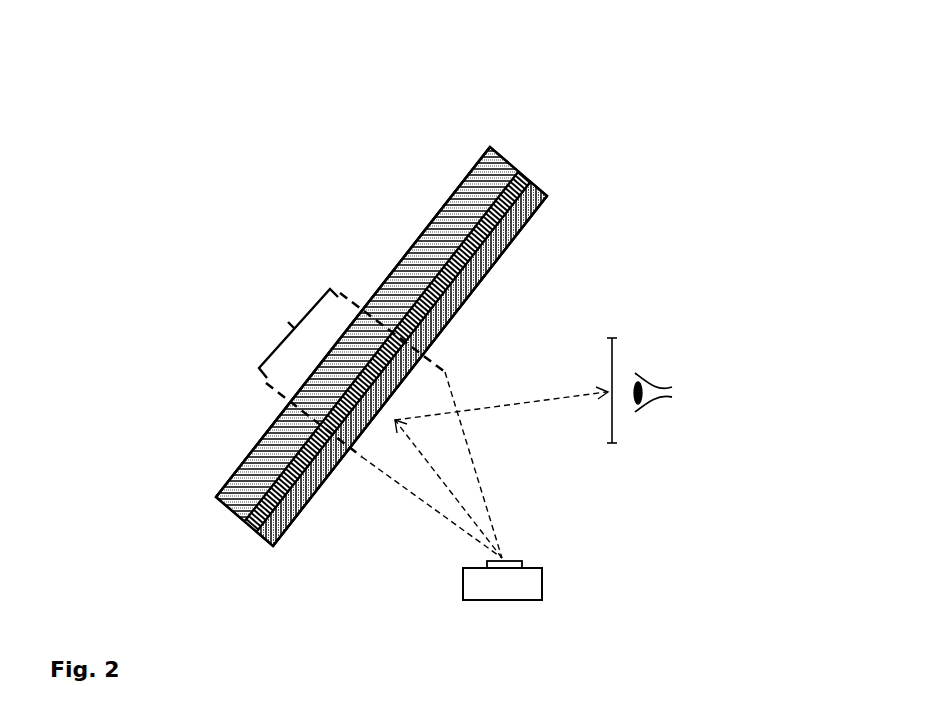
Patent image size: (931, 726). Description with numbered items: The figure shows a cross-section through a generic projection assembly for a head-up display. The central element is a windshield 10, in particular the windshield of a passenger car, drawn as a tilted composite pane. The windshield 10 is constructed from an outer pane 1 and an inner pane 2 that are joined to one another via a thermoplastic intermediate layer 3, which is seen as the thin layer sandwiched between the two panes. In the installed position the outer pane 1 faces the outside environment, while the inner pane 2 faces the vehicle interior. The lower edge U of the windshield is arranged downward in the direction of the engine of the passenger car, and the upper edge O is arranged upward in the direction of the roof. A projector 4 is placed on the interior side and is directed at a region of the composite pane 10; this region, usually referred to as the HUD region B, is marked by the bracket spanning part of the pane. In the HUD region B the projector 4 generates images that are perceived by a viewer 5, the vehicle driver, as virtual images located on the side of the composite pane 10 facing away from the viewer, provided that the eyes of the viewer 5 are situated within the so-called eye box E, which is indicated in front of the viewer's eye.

The windshield 10 is at (413, 297).
The outer pane 1 is at (446, 223).
The thermoplastic intermediate layer 3 is at (522, 178).
The inner pane 2 is at (550, 197).
The projector 4 is at (523, 587).
The viewer 5 is at (668, 372).
The HUD region B is at (352, 373).
The eye box E is at (628, 353).
The upper edge O is at (520, 130).
The lower edge U is at (247, 552).